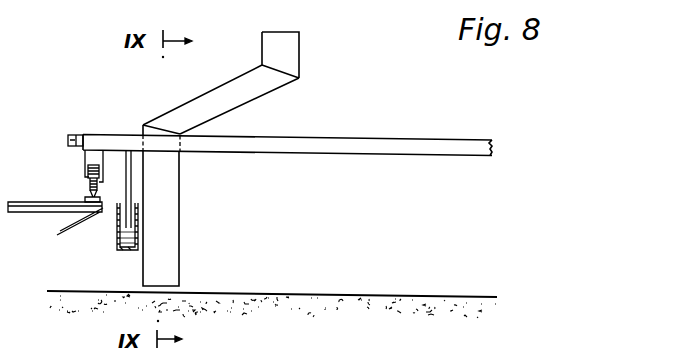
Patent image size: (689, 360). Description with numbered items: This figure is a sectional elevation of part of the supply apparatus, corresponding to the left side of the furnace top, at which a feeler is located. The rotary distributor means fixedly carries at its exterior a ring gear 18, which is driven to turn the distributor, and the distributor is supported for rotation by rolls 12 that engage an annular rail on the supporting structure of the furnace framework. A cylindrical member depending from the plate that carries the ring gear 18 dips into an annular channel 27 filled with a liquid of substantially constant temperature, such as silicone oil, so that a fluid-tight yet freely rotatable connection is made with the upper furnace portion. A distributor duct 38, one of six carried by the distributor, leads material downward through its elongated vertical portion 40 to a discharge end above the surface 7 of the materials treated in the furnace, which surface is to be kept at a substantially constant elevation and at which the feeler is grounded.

The surface of the materials treated in the furnace 7 is at (373, 297).
The rolls 12 is at (87, 187).
The ring gear 18 is at (78, 135).
The annular channel 27 is at (117, 235).
The distributor duct 38 is at (290, 60).
The elongated vertical portion of the distributor duct 40 is at (167, 268).